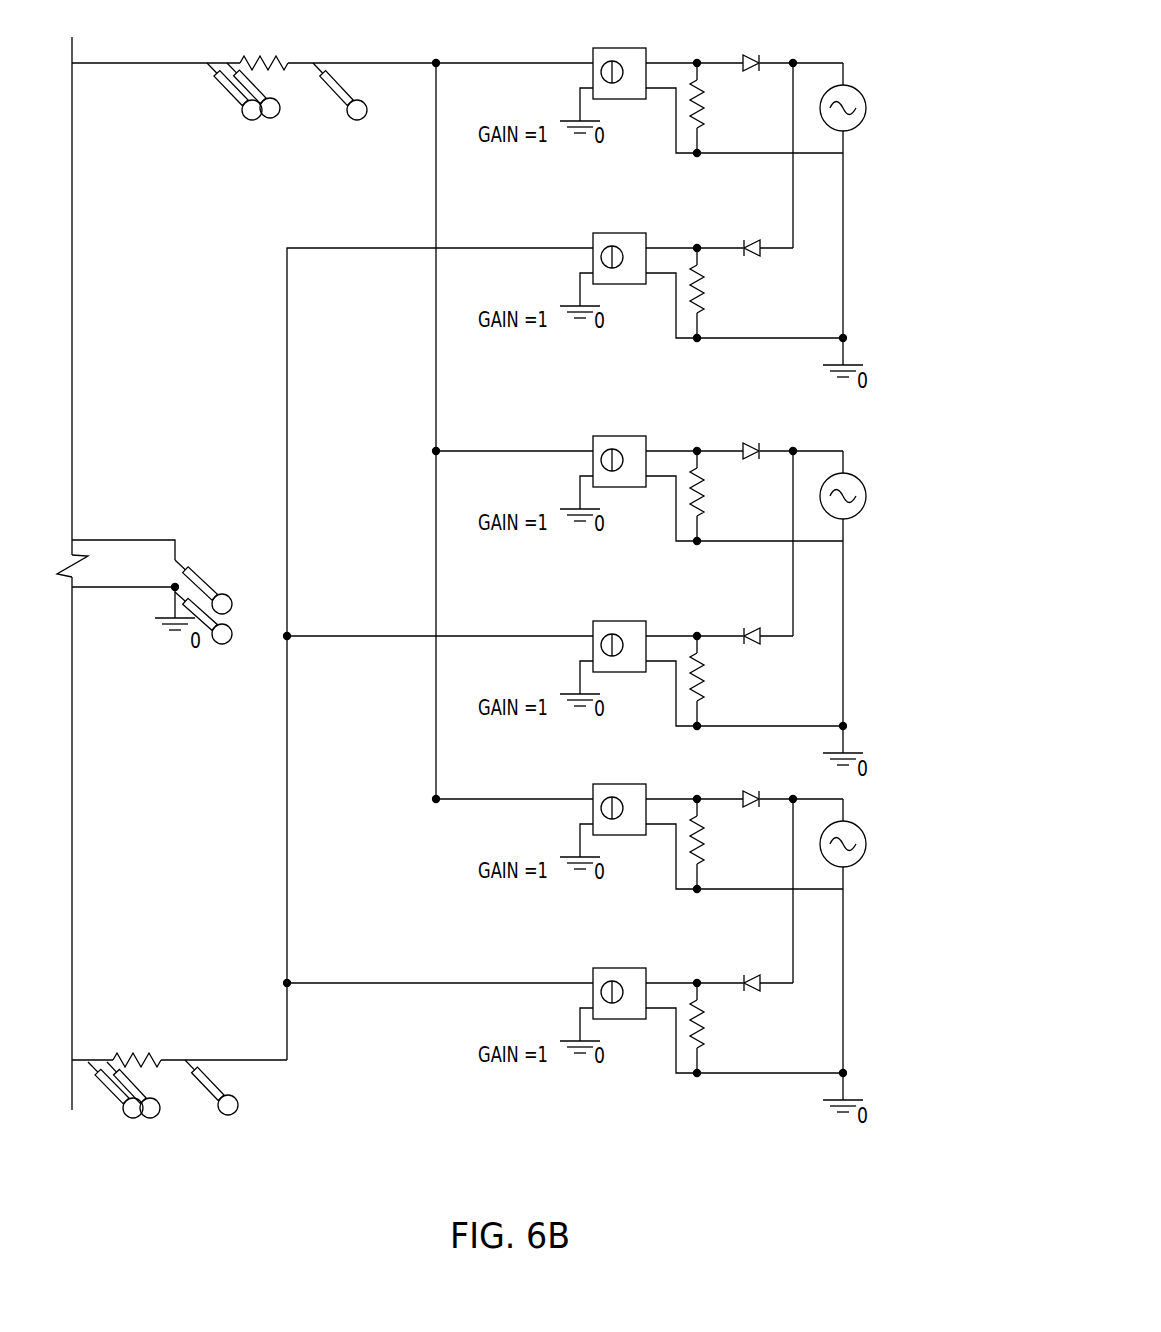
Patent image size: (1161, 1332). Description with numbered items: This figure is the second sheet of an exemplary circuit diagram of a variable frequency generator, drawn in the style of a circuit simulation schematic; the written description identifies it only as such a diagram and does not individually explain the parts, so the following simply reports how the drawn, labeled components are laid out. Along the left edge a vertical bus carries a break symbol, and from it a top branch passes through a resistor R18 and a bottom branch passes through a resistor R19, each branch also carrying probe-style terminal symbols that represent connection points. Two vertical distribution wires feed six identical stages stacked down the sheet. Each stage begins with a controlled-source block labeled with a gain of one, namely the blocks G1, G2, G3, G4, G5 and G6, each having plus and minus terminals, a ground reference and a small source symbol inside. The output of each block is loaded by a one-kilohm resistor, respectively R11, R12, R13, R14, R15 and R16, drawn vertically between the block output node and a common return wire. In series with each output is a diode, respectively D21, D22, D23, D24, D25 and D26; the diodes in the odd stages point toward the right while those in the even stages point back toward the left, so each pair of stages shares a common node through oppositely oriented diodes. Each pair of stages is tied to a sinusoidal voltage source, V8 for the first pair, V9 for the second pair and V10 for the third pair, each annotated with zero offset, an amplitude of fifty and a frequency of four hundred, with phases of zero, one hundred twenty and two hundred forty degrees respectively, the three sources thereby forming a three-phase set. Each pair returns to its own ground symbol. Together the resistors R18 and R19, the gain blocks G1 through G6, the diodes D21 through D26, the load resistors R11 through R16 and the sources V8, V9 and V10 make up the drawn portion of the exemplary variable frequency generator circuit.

The resistor R18 is at (264, 43).
The resistor R19 is at (136, 1040).
The voltage-controlled current source G1 is at (622, 75).
The voltage-controlled current source G2 is at (622, 260).
The voltage-controlled current source G3 is at (622, 463).
The voltage-controlled current source G4 is at (622, 648).
The voltage-controlled current source G5 is at (622, 811).
The voltage-controlled current source G6 is at (622, 995).
The diode D21 is at (745, 39).
The diode D22 is at (745, 224).
The diode D23 is at (745, 427).
The diode D24 is at (745, 612).
The diode D25 is at (745, 775).
The diode D26 is at (745, 959).
The resistor R11 (1k) R11 is at (728, 108).
The resistor R12 (1k) R12 is at (728, 293).
The resistor R13 (1k) R13 is at (728, 496).
The resistor R14 (1k) R14 is at (728, 681).
The resistor R15 (1k) R15 is at (728, 844).
The resistor R16 (1k) R16 is at (728, 1028).
The sinusoidal voltage source V8 is at (889, 124).
The sinusoidal voltage source V9 is at (890, 512).
The sinusoidal voltage source V10 is at (888, 860).